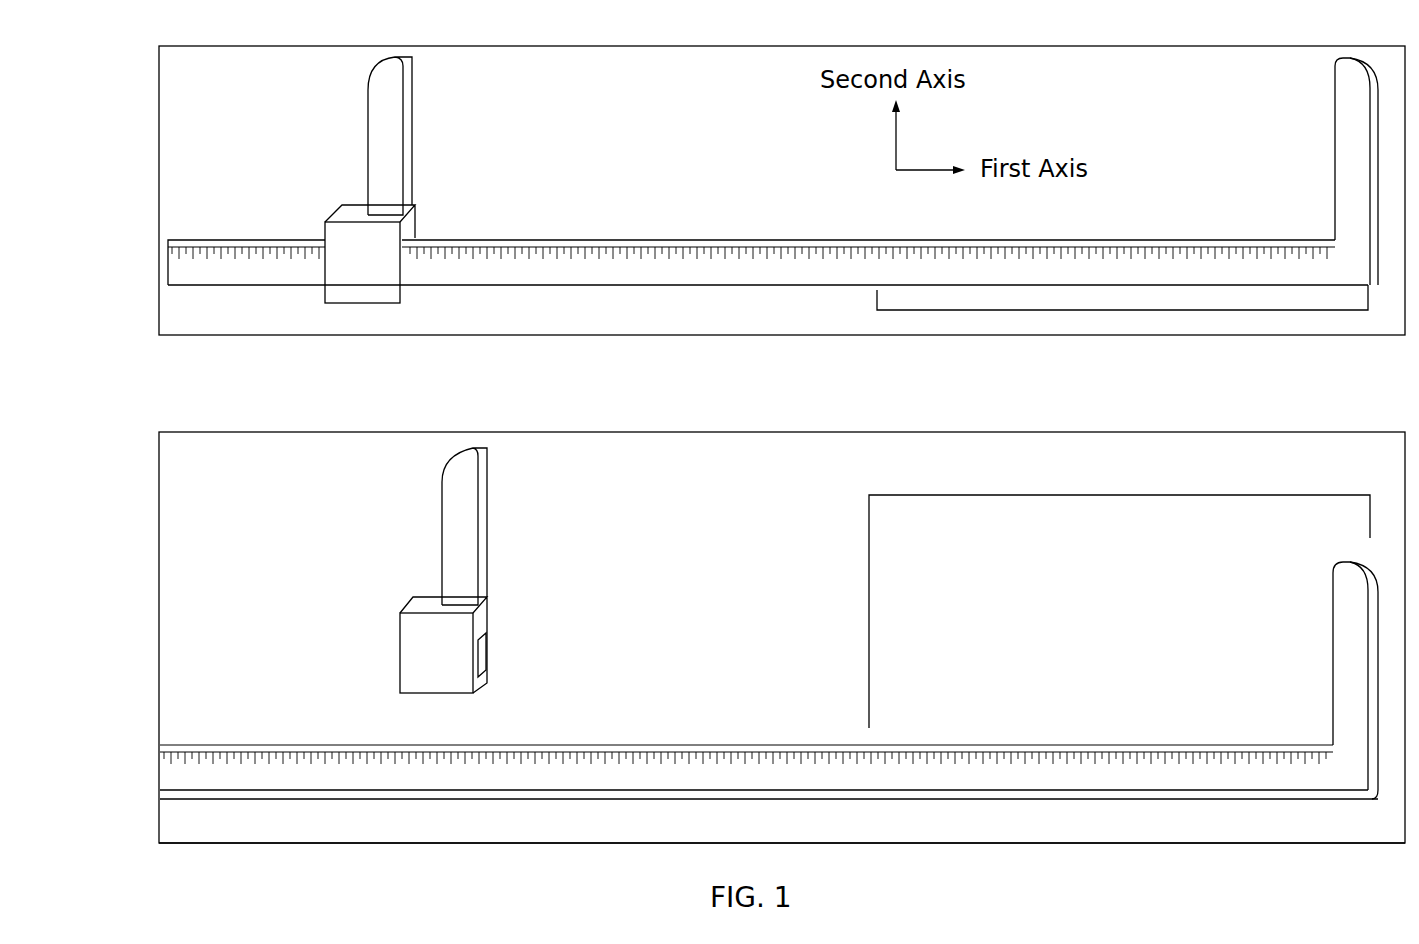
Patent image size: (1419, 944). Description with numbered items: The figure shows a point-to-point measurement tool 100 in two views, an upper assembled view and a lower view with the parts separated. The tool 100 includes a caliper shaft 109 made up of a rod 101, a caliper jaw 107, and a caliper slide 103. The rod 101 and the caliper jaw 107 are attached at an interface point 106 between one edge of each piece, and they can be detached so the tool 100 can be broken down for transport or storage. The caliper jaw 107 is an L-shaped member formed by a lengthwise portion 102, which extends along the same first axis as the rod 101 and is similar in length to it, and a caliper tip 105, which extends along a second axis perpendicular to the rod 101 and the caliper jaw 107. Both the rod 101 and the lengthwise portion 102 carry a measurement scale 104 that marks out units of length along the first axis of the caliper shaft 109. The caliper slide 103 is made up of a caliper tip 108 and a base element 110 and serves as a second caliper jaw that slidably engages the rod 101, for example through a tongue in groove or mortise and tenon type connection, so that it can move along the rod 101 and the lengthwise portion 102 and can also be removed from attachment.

The point-to-point measurement tool 100 is at (756, 444).
The rod 101 is at (247, 738).
The lengthwise portion 102 is at (1158, 746).
The caliper slide 103 is at (422, 588).
The measurement scale 104 is at (965, 751).
The caliper tip 105 is at (1333, 673).
The interface point 106 is at (846, 790).
The caliper jaw 107 is at (1072, 495).
The caliper tip 108 is at (537, 651).
The caliper shaft 109 is at (757, 835).
The base element 110 is at (537, 530).